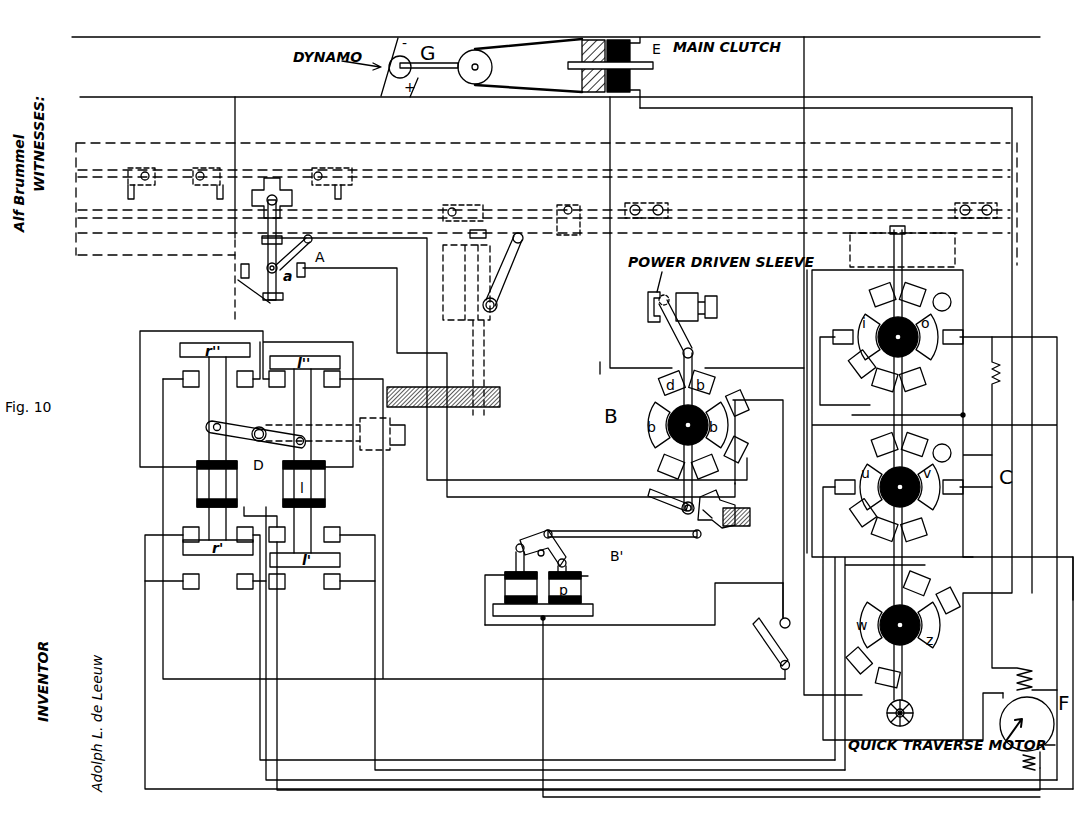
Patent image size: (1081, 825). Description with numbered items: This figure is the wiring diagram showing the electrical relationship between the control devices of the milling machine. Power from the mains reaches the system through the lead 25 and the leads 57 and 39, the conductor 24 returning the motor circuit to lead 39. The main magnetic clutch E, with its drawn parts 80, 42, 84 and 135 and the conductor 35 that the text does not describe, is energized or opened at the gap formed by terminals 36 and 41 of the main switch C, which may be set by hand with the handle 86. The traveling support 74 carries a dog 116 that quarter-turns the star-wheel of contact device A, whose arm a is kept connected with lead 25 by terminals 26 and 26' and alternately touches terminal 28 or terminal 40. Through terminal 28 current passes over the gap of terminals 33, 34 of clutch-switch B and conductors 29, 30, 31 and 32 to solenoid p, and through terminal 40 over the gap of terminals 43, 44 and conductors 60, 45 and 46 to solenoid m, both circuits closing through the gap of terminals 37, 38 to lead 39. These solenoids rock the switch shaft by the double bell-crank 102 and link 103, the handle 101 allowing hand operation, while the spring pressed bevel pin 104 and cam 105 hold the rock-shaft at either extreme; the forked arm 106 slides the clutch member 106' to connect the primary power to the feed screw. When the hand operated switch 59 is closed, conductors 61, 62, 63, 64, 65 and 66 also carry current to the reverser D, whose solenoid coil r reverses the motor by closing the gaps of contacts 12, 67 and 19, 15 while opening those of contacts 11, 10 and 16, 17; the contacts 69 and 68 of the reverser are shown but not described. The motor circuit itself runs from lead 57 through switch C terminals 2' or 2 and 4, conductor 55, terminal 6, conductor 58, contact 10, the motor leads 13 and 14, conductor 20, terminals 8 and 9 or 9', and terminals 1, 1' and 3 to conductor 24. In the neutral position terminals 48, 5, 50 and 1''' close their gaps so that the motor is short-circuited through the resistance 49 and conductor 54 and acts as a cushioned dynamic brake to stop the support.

The clutch friction member 80 is at (583, 40).
The clutch casing 42 is at (632, 37).
The lead 39 is at (827, 351).
The conductor 35 is at (1032, 97).
The lead 25 is at (235, 196).
The belt 84 is at (528, 65).
The clutch shaft 135 is at (653, 68).
The lead 57 is at (607, 94).
The traveling support 74 is at (467, 143).
The dog 116 is at (289, 202).
The terminal 28 is at (264, 241).
The terminal 26 is at (235, 283).
The terminal 26' is at (287, 303).
The terminal 40 is at (306, 270).
The conductor 61 is at (353, 351).
The contact 69 is at (182, 379).
The contact 68 is at (248, 365).
The conductor 63 is at (278, 379).
The conductor 62 is at (333, 379).
The conductor 64 is at (197, 474).
The conductor 65 is at (247, 507).
The conductor 66 is at (268, 508).
The contact 11 is at (609, 658).
The contact 10 is at (536, 643).
The contact 19 is at (654, 658).
The contact 15 is at (584, 648).
The contact 12 is at (174, 582).
The contact 67 is at (251, 582).
The contact 17 is at (278, 582).
The contact 16 is at (349, 582).
The forked arm 106 is at (699, 329).
The clutch member 106' is at (651, 324).
The terminal 44 is at (733, 403).
The terminal 43 is at (733, 449).
The terminal 33 is at (671, 466).
The terminal 34 is at (704, 466).
The conductor 24 is at (803, 490).
The handle 101 is at (672, 498).
The spring pressed bevel pin 104 is at (735, 527).
The cam 105 is at (706, 527).
The link 103 is at (616, 531).
The double bell-crank 102 is at (545, 532).
The conductor 45 is at (505, 576).
The conductor 46 is at (495, 600).
The conductor 29 is at (588, 576).
The conductor 30 is at (593, 606).
The conductor 31 is at (545, 621).
The conductor 32 is at (788, 716).
The hand operated switch 59 is at (775, 618).
The conductor 60 is at (779, 592).
The terminal 2 is at (882, 294).
The terminal 4 is at (843, 337).
The terminal 6 is at (953, 337).
The terminal 5 is at (860, 365).
The terminal 2' is at (885, 382).
The terminal 1' is at (912, 381).
The terminal 48 is at (942, 302).
The resistance 49 is at (990, 384).
The terminal 9 is at (884, 444).
The terminal 1 is at (914, 444).
The terminal 8 is at (845, 487).
The terminal 3 is at (953, 487).
The terminal 1''' is at (860, 514).
The terminal 9' is at (884, 530).
The terminal 50 is at (942, 453).
The conductor 58 is at (968, 553).
The conductor 54 is at (1073, 557).
The terminal 41 is at (916, 583).
The terminal 36 is at (948, 600).
The terminal 37 is at (859, 660).
The terminal 38 is at (887, 679).
The handle 86 is at (914, 713).
The motor lead 13 is at (1011, 698).
The conductor 55 is at (1024, 623).
The motor lead 14 is at (1045, 745).
The conductor 20 is at (1041, 761).